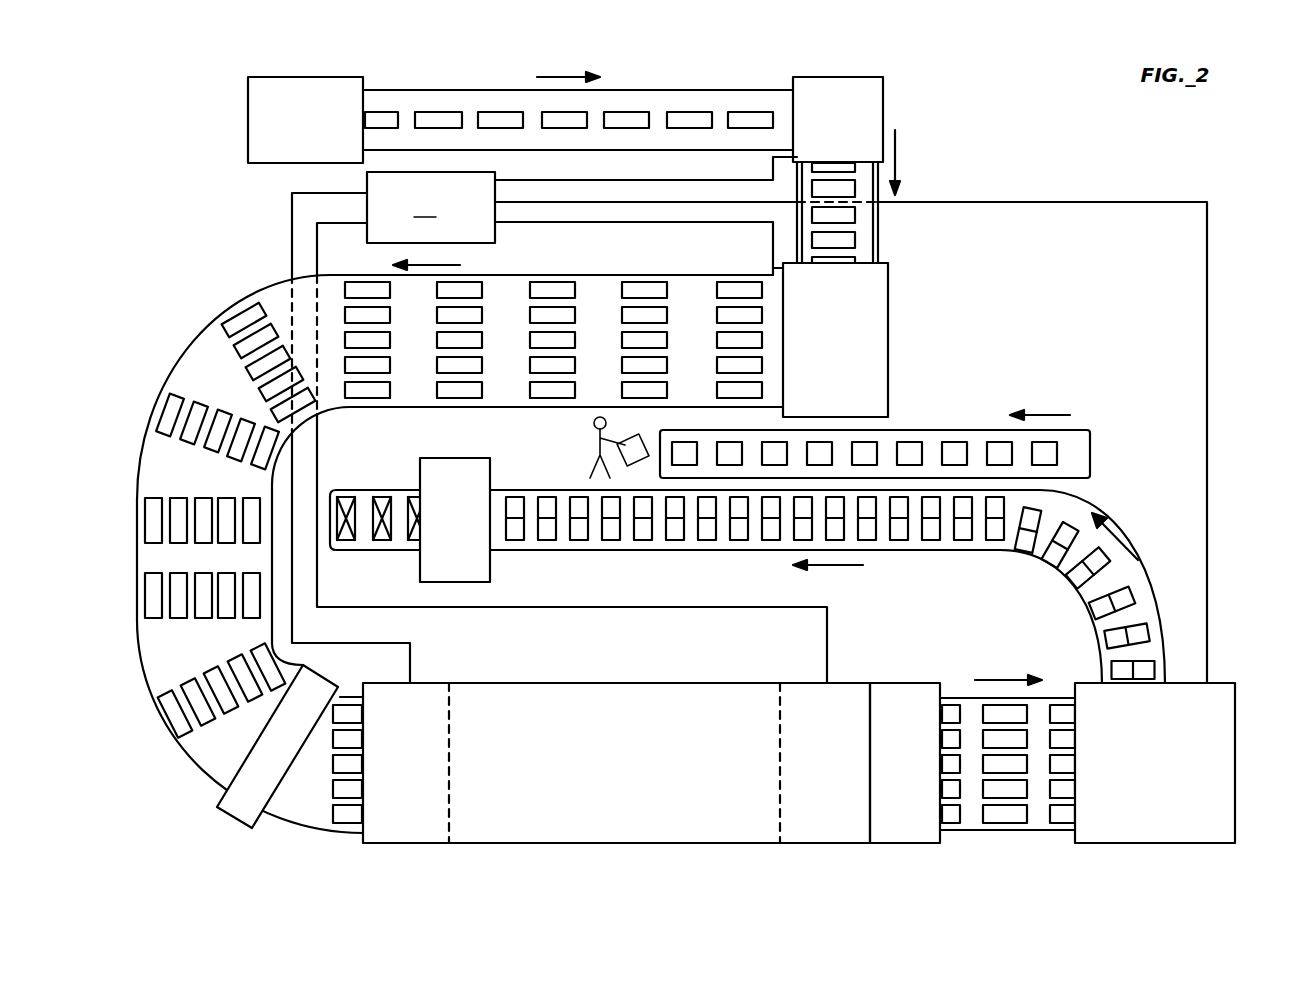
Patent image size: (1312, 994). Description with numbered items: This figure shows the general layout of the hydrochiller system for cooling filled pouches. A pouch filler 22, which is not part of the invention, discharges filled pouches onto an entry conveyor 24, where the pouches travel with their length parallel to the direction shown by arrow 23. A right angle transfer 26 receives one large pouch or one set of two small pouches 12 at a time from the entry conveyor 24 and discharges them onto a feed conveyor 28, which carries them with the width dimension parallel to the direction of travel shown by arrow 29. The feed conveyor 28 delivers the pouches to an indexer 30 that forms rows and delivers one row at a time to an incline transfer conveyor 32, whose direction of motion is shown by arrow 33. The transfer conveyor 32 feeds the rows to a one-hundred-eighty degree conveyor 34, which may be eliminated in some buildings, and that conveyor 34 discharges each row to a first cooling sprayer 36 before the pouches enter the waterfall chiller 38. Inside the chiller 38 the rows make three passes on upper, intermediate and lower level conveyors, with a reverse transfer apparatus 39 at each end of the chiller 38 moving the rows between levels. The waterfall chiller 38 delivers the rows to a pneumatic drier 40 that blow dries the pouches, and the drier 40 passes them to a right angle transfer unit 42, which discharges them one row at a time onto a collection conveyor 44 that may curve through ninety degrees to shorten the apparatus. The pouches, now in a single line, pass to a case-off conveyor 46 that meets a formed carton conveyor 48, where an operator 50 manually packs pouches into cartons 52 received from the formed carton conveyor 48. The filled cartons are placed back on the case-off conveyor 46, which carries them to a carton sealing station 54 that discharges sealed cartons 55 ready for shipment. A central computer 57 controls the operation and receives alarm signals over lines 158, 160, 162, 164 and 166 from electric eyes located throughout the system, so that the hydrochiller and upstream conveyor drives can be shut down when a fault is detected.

The small pouches 12 is at (497, 110).
The pouch filler 22 is at (322, 87).
The arrow 23 is at (558, 73).
The entry conveyor 24 is at (690, 98).
The right angle transfer 26 is at (838, 90).
The feed conveyor 28 is at (873, 252).
The arrow 29 is at (907, 145).
The indexer 30 is at (880, 332).
The transfer conveyor 32 is at (698, 278).
The arrow 33 is at (450, 265).
The 180 degree conveyor 34 is at (188, 370).
The first cooling sprayer 36 is at (223, 793).
The waterfall chiller 38 is at (637, 688).
The reverse transfer apparatus 39 is at (427, 690).
The pneumatic drier 40 is at (905, 693).
The right angle transfer unit 42 is at (1225, 683).
The collection conveyor 44 is at (1055, 512).
The case-off conveyor 46 is at (917, 542).
The formed carton conveyor 48 is at (908, 437).
The operator 50 is at (593, 453).
The cartons 52 is at (958, 452).
The carton sealing station 54 is at (445, 465).
The sealed cartons 55 is at (348, 500).
The central computer 57 is at (431, 207).
The line 158 is at (583, 177).
The line 160 is at (633, 227).
The line 162 is at (698, 197).
The line 164 is at (292, 220).
The line 166 is at (315, 268).